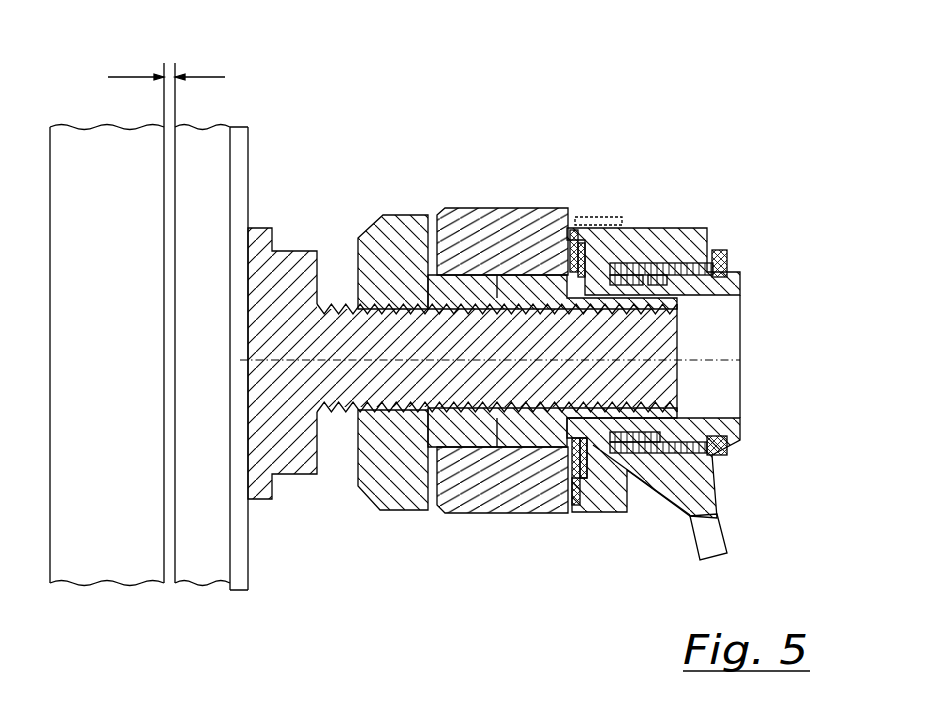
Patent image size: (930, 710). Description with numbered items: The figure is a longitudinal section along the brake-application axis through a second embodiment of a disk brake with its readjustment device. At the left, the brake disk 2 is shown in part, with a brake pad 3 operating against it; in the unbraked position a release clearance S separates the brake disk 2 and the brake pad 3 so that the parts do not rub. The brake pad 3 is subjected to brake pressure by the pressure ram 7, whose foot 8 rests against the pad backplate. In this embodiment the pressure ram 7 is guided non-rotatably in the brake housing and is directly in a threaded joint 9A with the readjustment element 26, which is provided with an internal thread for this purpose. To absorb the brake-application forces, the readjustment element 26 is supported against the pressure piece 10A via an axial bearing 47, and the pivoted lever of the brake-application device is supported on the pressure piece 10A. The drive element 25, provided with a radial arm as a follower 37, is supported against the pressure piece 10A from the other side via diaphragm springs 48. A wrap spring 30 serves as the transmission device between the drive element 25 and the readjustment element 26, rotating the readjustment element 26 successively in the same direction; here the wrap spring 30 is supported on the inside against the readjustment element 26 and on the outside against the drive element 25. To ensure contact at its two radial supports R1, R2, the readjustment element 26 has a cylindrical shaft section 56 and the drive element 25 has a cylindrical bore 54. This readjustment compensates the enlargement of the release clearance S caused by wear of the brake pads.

The brake disk 2 is at (102, 547).
The brake pad 3 is at (203, 594).
The release clearance S is at (166, 62).
The pressure ram 7 is at (345, 345).
The foot 8 is at (257, 467).
The threaded joint 9A is at (380, 290).
The pressure piece 10A is at (480, 480).
The readjustment element 26 is at (410, 437).
The axial bearing 47 is at (433, 273).
The diaphragm springs 48 is at (573, 222).
The drive element 25 is at (640, 477).
The wrap spring 30 is at (670, 258).
The follower 37 is at (713, 535).
The cylindrical bore 54 is at (648, 268).
The cylindrical shaft section 56 is at (682, 282).
The radial support R1 is at (622, 262).
The radial support R2 is at (650, 263).